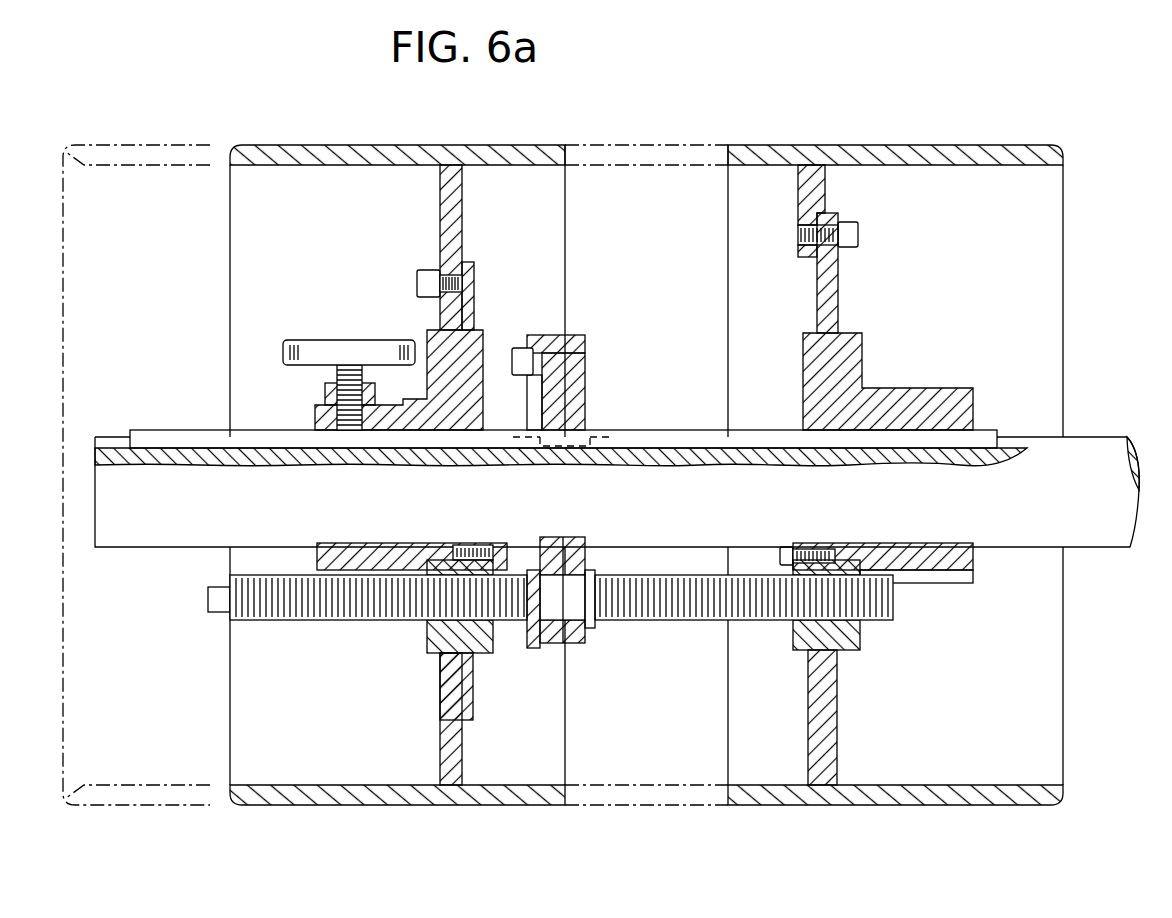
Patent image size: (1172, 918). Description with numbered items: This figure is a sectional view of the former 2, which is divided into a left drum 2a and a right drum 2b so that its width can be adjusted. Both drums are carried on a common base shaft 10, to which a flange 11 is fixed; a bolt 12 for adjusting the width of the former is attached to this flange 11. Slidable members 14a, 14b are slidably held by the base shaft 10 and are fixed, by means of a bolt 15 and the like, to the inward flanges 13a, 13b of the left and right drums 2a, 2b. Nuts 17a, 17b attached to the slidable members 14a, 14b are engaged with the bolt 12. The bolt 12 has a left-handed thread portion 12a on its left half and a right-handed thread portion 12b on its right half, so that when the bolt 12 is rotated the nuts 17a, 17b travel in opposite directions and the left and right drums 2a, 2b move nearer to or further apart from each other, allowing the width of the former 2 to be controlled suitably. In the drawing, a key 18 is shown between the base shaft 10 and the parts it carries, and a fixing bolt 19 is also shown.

The former 2 is at (790, 120).
The left drum 2a is at (325, 145).
The right drum 2b is at (968, 145).
The base shaft 10 is at (1095, 547).
The flange 11 is at (585, 384).
The bolt 12 is at (600, 620).
The left-hand threaded portion of lead screw 12a is at (343, 620).
The right-hand threaded portion of lead screw 12b is at (758, 620).
The inward flange 13a is at (462, 211).
The inward flange 13b is at (825, 195).
The slidable member 14a is at (425, 330).
The slidable member 14b is at (862, 378).
The bolt 15 is at (417, 278).
The nut 17a is at (493, 625).
The nut 17b is at (860, 622).
The key 18 is at (690, 430).
The fixing bolt 19 is at (313, 340).